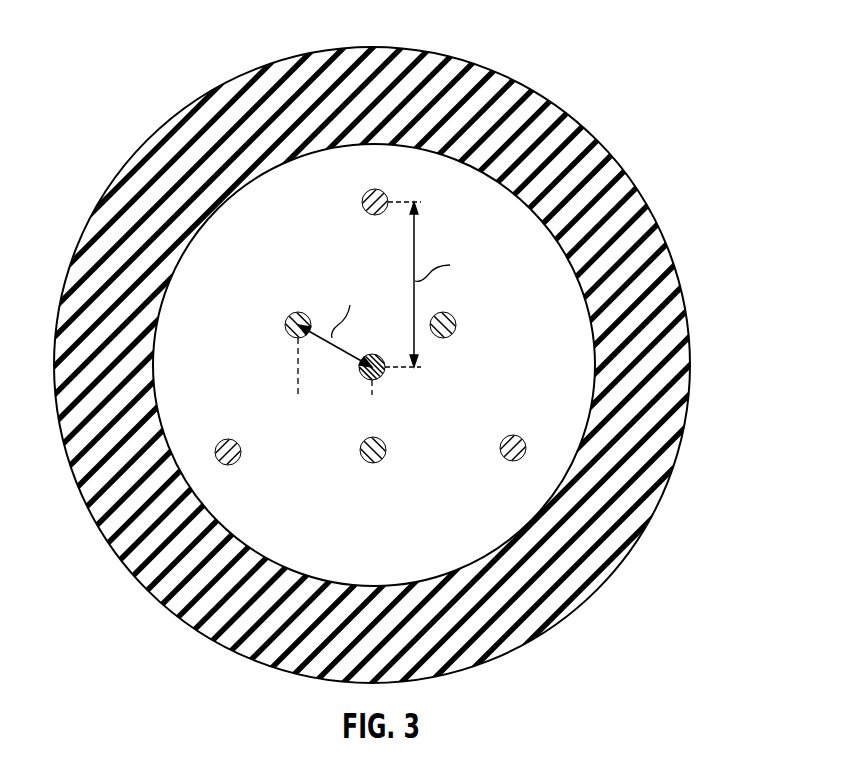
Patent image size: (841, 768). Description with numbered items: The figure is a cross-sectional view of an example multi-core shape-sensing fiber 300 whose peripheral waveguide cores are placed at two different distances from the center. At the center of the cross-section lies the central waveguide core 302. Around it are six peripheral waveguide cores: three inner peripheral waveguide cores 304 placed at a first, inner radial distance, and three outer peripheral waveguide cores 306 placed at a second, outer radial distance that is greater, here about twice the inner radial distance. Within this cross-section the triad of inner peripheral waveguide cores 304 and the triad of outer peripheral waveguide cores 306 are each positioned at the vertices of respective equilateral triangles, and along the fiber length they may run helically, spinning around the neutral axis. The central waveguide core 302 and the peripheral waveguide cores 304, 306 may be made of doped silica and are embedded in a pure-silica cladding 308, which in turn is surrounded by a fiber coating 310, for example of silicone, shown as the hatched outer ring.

The multi-core shape-sensing fiber 300 is at (98, 46).
The central waveguide core 302 is at (382, 378).
The inner peripheral waveguide cores 304 is at (290, 338).
The outer peripheral waveguide cores 306 is at (363, 207).
The cladding 308 is at (550, 298).
The fiber coating 310 is at (688, 405).